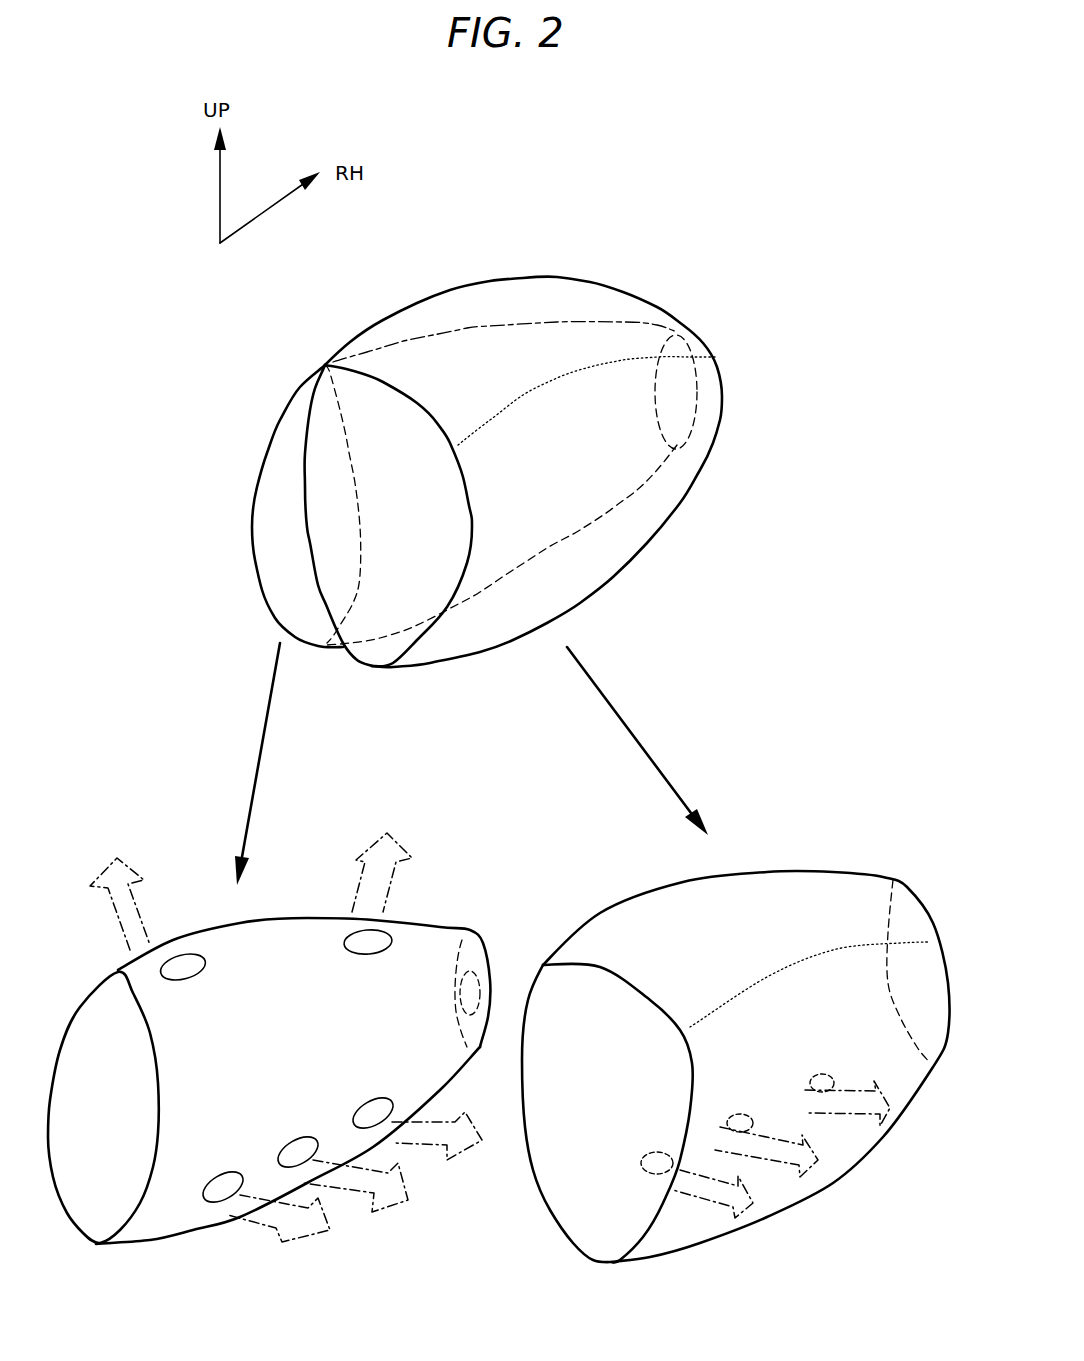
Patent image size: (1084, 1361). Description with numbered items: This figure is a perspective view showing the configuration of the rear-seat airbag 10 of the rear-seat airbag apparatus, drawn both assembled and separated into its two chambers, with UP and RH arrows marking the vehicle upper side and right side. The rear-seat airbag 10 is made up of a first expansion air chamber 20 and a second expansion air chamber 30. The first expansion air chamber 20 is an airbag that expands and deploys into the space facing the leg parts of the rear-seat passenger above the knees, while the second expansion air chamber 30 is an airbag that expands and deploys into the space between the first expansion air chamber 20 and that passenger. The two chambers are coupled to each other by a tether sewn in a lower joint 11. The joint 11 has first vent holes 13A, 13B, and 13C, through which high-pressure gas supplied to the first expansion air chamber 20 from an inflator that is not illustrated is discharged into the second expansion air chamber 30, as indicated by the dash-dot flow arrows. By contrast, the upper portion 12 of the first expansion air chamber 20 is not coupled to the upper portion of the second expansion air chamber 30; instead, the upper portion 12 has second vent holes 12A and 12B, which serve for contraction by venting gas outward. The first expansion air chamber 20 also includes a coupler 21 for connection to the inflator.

The rear-seat airbag 10 is at (843, 183).
The lower joint 11 is at (638, 490).
The upper portion of the first expansion air chamber 12 is at (523, 300).
The second vent hole 12A is at (178, 957).
The second vent hole 12B is at (368, 940).
The first vent hole 13A is at (393, 1107).
The first vent hole 13B is at (313, 1152).
The first vent hole 13C is at (217, 1197).
The first expansion air chamber 20 is at (292, 552).
The coupler 21 is at (485, 938).
The second expansion air chamber 30 is at (520, 495).